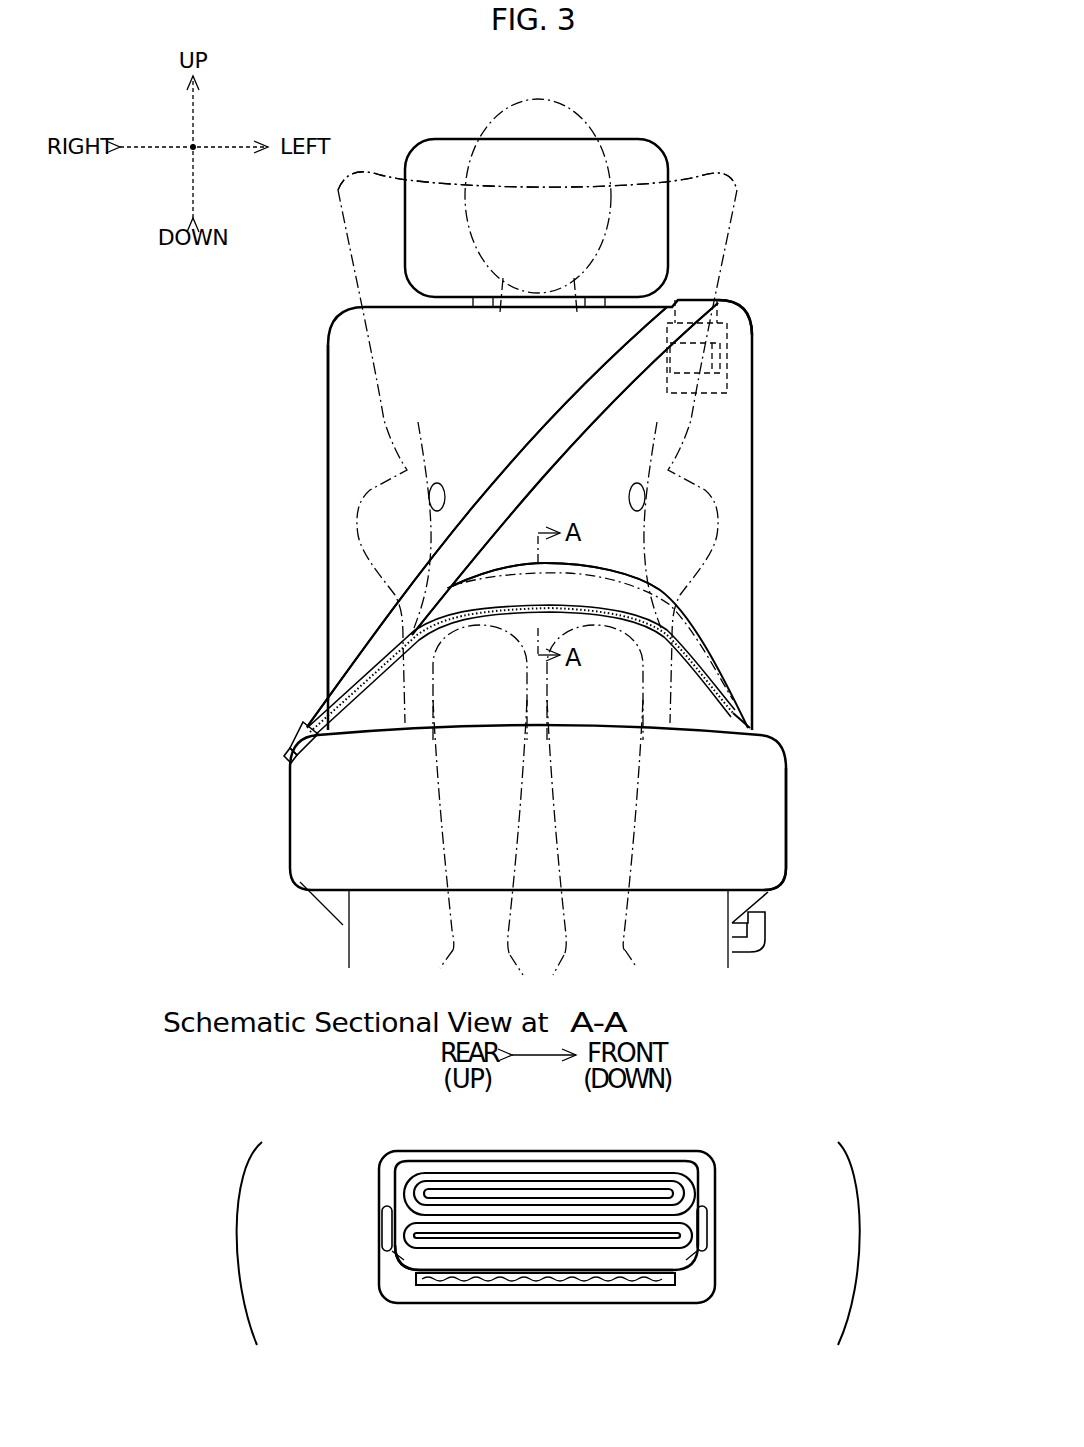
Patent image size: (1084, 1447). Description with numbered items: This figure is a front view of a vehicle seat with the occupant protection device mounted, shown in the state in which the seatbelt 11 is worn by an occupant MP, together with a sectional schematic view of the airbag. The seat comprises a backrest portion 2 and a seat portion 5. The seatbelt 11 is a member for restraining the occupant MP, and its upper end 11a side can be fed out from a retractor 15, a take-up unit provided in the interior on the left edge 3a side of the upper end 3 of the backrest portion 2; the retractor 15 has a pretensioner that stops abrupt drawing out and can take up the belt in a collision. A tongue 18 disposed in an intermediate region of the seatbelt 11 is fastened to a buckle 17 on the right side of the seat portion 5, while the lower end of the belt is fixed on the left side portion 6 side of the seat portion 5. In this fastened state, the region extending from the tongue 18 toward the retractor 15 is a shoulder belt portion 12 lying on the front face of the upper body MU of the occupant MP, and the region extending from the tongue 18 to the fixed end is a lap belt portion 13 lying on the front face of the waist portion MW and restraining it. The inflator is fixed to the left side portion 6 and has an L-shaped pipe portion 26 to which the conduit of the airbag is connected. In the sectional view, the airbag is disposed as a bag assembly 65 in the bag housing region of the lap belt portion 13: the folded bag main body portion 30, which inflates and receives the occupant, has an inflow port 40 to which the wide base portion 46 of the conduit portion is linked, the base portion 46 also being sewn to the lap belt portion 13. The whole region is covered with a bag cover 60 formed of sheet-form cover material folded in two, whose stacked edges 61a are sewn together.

The upper end 3 is at (318, 318).
The left edge 3a is at (757, 305).
The backrest portion 2 is at (322, 455).
The retractor 15 is at (742, 355).
The occupant MP is at (606, 118).
The upper body MU is at (478, 418).
The bag main body portion 30 is at (738, 180).
The upper end 11a is at (737, 298).
The shoulder belt portion 12 is at (450, 567).
The seatbelt 11 is at (197, 520).
The lap belt portion 13 is at (400, 633).
The bag cover 60 is at (708, 652).
The waist portion MW is at (648, 613).
The bag assembly 65 is at (632, 570).
The buckle 17 is at (305, 735).
The tongue 18 is at (292, 745).
The seat portion 5 is at (292, 850).
The left side portion 6 is at (797, 822).
The pipe portion 26 is at (760, 942).
The edges 61a is at (374, 1228).
The base portion 46 is at (415, 1265).
The inflow port 40 is at (502, 1262).